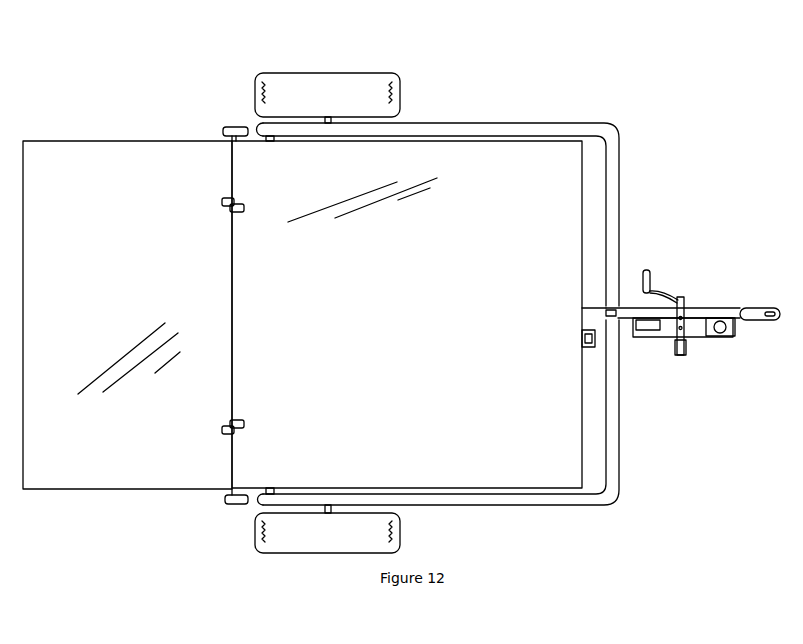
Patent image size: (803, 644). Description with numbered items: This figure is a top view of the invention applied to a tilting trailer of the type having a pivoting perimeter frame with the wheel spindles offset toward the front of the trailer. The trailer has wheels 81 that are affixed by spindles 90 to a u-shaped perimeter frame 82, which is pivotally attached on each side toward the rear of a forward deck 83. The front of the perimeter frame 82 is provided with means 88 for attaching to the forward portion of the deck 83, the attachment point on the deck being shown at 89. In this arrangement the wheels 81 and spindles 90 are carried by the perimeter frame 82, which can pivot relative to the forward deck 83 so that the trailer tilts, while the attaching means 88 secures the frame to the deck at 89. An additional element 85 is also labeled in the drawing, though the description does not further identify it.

The wheels 81 is at (382, 73).
The u-shaped perimeter frame 82 is at (575, 123).
The forward deck 83 is at (482, 158).
The tailgate 85 is at (272, 137).
The means for attaching 88 is at (620, 323).
The attachment location on forward portion of deck 89 is at (603, 317).
The spindles 90 is at (327, 117).